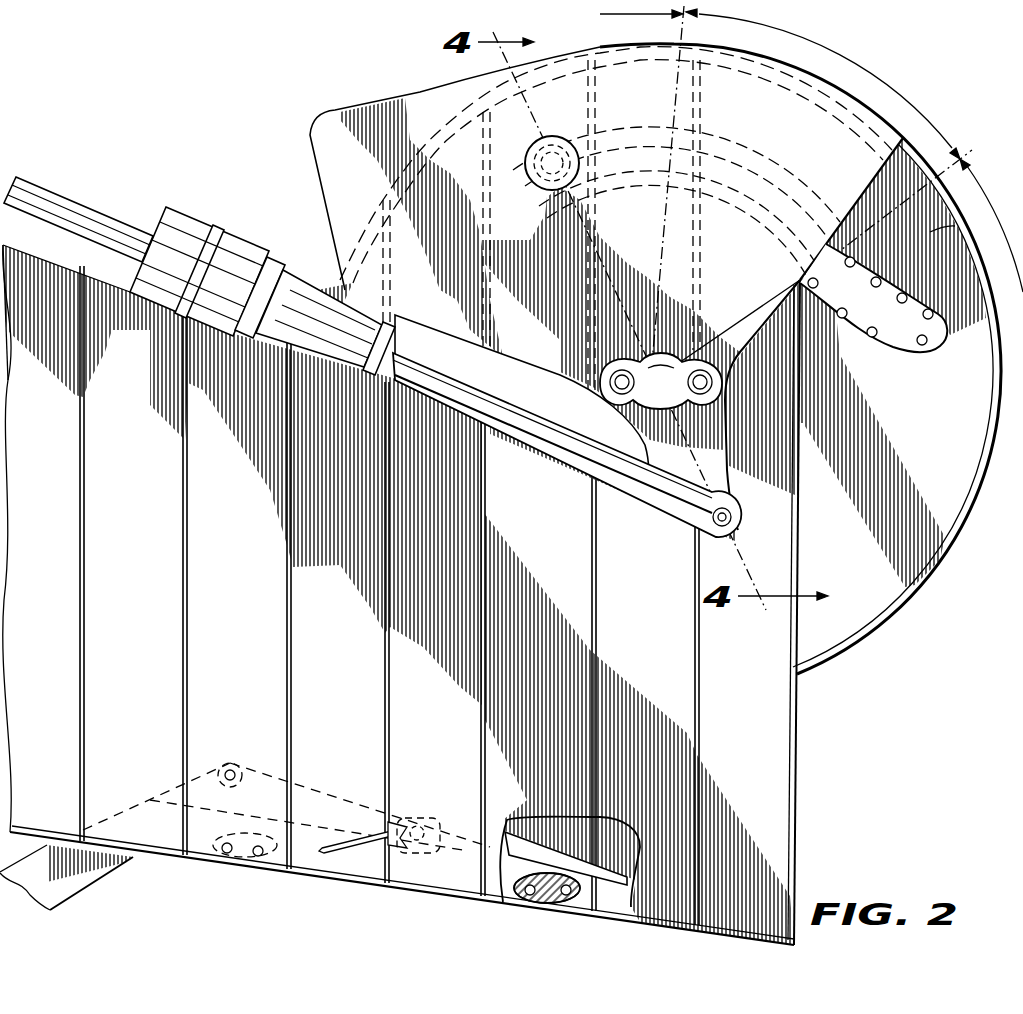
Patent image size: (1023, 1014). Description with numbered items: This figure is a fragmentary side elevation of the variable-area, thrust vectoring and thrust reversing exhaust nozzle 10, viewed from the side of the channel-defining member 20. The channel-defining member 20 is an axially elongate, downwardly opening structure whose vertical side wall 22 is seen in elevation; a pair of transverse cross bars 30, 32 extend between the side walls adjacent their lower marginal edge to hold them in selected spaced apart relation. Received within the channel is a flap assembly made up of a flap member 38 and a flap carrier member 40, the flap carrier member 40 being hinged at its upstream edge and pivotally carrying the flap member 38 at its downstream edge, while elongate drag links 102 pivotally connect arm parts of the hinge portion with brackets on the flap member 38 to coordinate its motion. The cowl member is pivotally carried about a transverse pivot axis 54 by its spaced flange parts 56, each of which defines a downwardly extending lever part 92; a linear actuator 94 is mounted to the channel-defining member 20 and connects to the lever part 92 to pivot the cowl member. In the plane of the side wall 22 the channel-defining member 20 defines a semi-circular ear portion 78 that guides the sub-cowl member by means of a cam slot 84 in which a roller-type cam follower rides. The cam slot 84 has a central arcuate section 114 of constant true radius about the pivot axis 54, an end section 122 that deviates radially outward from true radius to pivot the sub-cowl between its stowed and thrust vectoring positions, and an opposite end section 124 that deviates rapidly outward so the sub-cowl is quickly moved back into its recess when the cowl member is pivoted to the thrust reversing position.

The exhaust nozzle 10 is at (261, 160).
The channel-defining member 20 is at (403, 903).
The side wall 22 is at (775, 742).
The transverse cross bar 30 is at (238, 858).
The transverse cross bar 32 is at (528, 910).
The flap member 38 is at (352, 790).
The flap carrier member 40 is at (85, 875).
The pivot axis 54 is at (663, 357).
The flange part 56 is at (407, 118).
The ear portion 78 is at (945, 232).
The cam slot 84 is at (895, 322).
The lever part 92 is at (648, 494).
The linear actuator 94 is at (180, 205).
The drag link 102 is at (333, 887).
The central arcuate section 114 is at (823, 84).
The end section 122 is at (534, 43).
The end section 124 is at (1018, 285).